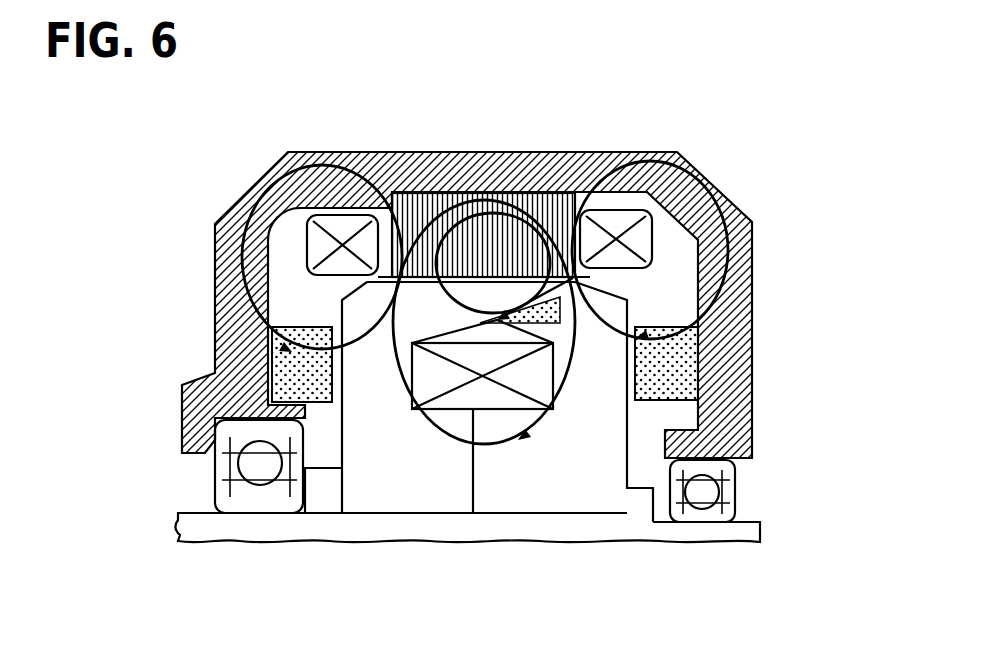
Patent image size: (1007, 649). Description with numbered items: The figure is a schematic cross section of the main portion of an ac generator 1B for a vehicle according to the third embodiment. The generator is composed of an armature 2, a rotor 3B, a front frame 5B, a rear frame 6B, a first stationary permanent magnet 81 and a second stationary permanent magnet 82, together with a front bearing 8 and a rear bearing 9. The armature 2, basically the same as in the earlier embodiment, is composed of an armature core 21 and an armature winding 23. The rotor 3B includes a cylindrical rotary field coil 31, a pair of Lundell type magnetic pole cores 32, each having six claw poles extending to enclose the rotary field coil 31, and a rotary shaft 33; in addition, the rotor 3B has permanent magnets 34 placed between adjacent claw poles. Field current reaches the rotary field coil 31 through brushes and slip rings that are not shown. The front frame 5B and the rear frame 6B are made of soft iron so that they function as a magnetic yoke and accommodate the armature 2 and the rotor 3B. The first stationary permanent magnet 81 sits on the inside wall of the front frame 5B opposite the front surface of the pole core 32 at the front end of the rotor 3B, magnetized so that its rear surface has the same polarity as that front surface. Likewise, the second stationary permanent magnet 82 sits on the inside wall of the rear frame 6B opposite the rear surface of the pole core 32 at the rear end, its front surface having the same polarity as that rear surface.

The ac generator 1B is at (718, 133).
The armature 2 is at (527, 192).
The armature core 21 is at (424, 200).
The armature winding 23 is at (342, 225).
The rotor 3B is at (628, 283).
The front frame 5B is at (232, 273).
The rear frame 6B is at (735, 323).
The front bearing 8 is at (237, 503).
The rear bearing 9 is at (710, 513).
The first stationary permanent magnet 81 is at (290, 367).
The second stationary permanent magnet 82 is at (688, 370).
The rotary field coil 31 is at (478, 408).
The Lundell type magnetic pole core 32 is at (380, 500).
The rotary shaft 33 is at (237, 533).
The permanent magnet 34 is at (573, 370).